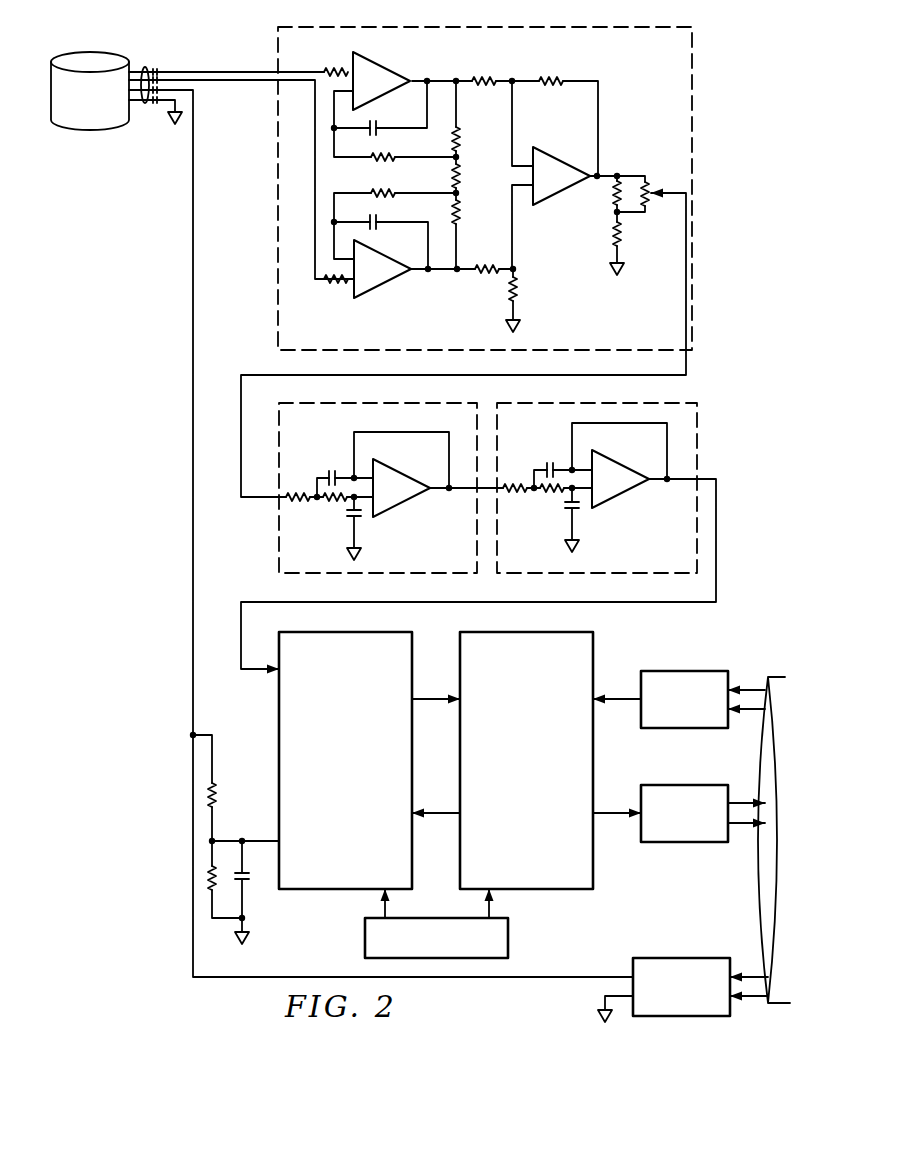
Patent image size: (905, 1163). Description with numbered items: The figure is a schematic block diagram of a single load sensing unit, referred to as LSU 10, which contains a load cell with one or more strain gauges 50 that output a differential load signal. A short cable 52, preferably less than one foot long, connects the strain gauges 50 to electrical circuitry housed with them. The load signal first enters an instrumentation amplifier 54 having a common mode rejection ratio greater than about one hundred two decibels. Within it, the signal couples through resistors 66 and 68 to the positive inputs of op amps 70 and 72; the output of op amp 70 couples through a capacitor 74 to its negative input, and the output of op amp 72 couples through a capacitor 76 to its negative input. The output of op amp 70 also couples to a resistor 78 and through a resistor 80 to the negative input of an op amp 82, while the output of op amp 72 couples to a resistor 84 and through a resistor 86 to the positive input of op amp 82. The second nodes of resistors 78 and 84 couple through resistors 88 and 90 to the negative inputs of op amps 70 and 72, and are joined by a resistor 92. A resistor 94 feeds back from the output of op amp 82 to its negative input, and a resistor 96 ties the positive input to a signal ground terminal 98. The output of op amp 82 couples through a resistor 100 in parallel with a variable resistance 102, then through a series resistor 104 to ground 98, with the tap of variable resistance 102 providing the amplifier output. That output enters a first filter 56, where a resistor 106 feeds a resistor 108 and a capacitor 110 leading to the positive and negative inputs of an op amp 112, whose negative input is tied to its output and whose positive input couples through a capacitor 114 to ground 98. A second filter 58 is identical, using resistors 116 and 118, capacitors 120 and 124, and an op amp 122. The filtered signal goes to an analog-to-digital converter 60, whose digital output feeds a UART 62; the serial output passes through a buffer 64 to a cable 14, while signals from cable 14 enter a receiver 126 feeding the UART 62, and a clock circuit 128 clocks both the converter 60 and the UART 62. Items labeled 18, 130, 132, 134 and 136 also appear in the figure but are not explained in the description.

The load sensing unit 10 is at (141, 1006).
The cable 14 is at (766, 676).
The electronics circuit 18 is at (502, 1053).
The strain gauges 50 is at (88, 128).
The cable 52 is at (145, 67).
The instrumentation amplifier 54 is at (485, 188).
The first filter 56 is at (378, 488).
The second filter 58 is at (597, 488).
The analog-to-digital converter 60 is at (279, 716).
The universal asynchronous receiver/transmitter 62 is at (595, 636).
The buffer 64 is at (676, 843).
The resistor 66 is at (334, 68).
The resistor 68 is at (336, 283).
The operational amplifier 70 is at (393, 72).
The operational amplifier 72 is at (395, 281).
The capacitor 74 is at (378, 124).
The capacitor 76 is at (379, 228).
The resistor 78 is at (461, 134).
The resistor 80 is at (484, 77).
The operational amplifier 82 is at (560, 160).
The resistor 84 is at (461, 211).
The resistor 86 is at (487, 265).
The resistor 88 is at (395, 153).
The resistor 90 is at (399, 198).
The resistor 92 is at (461, 176).
The resistor 94 is at (552, 77).
The resistor 96 is at (519, 290).
The terminal 98 is at (170, 120).
The resistor 100 is at (612, 193).
The variable resistance 102 is at (645, 178).
The resistor 104 is at (612, 238).
The resistor 106 is at (297, 493).
The resistor 108 is at (332, 501).
The capacitor 110 is at (335, 470).
The operational amplifier 112 is at (410, 500).
The capacitor 114 is at (348, 518).
The resistor 116 is at (513, 484).
The resistor 118 is at (549, 494).
The capacitor 120 is at (552, 462).
The operational amplifier 122 is at (630, 492).
The capacitor 124 is at (565, 512).
The receiver 126 is at (675, 730).
The clock circuit 128 is at (365, 942).
The regulator 130 is at (672, 957).
The resistor 132 is at (218, 791).
The resistor 134 is at (208, 880).
The capacitor 136 is at (252, 882).